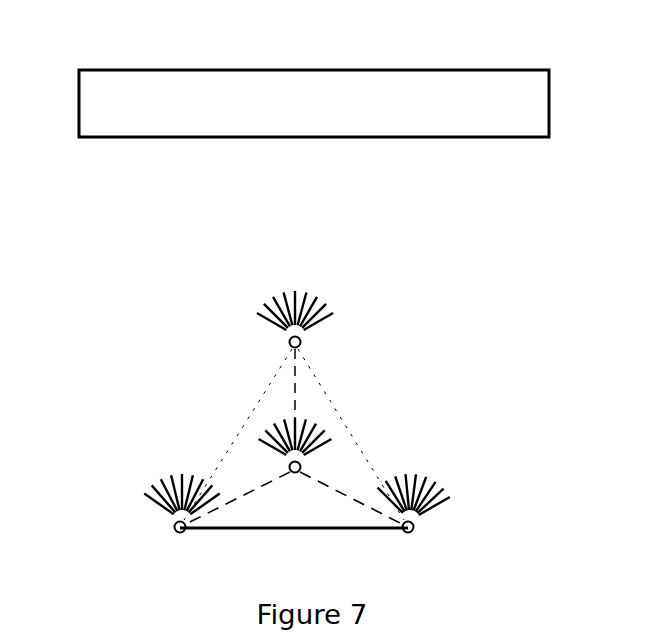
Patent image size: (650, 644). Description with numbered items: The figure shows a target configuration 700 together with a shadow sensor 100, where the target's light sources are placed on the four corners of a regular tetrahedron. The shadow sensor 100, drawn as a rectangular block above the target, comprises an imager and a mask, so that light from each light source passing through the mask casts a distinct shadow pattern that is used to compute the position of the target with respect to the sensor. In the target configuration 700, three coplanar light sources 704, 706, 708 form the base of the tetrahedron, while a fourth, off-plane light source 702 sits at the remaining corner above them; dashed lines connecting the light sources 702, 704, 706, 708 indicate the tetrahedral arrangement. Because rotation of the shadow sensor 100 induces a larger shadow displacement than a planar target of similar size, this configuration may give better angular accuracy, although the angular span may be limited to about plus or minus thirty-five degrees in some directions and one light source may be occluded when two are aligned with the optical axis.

The shadow sensor 100 is at (338, 122).
The target configuration 700 is at (185, 355).
The light source 702 is at (330, 332).
The light source 704 is at (460, 498).
The light source 706 is at (150, 475).
The light source 708 is at (342, 432).